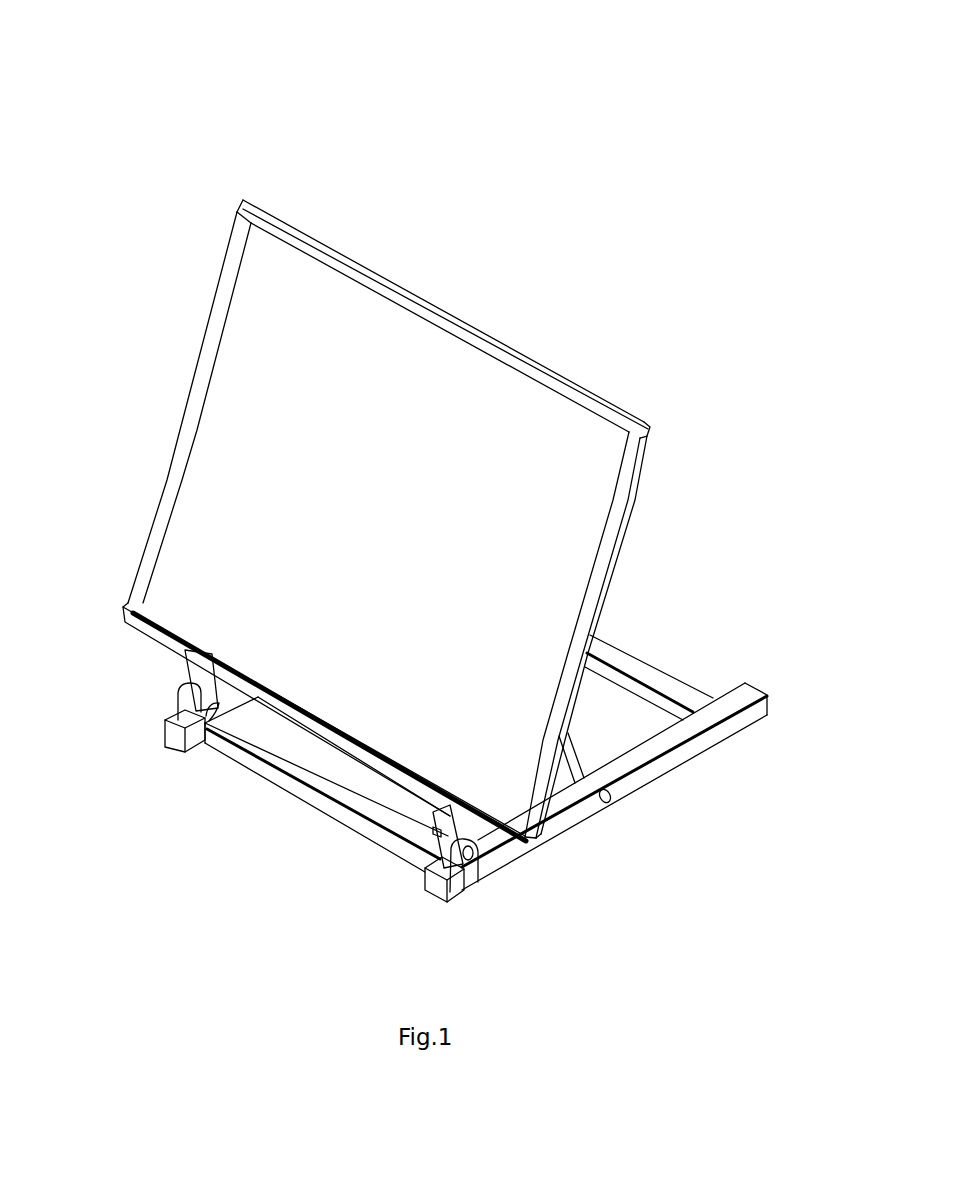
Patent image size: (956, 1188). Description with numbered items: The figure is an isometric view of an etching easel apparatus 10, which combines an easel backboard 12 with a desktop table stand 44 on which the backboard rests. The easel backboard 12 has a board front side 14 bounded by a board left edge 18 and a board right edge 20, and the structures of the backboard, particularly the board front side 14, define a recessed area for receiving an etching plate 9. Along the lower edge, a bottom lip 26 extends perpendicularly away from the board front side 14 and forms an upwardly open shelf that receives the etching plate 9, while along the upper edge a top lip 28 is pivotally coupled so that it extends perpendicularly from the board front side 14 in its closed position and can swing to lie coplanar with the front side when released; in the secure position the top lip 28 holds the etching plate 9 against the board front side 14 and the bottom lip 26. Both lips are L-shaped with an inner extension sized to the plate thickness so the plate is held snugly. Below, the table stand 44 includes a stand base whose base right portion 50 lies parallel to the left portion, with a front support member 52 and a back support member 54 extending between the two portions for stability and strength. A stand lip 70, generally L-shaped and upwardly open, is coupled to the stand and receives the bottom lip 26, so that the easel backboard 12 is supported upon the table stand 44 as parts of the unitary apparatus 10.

The etching easel apparatus 10 is at (257, 111).
The easel backboard 12 is at (535, 452).
The etching plate 9 is at (392, 513).
The top lip 28 is at (430, 315).
The board left edge 18 is at (186, 401).
The board right edge 20 is at (638, 483).
The board front side 14 is at (608, 551).
The bottom lip 26 is at (146, 630).
The table stand 44 is at (258, 794).
The front support member 52 is at (382, 834).
The stand lip 70 is at (337, 738).
The base right portion 50 is at (678, 752).
The back support member 54 is at (660, 680).